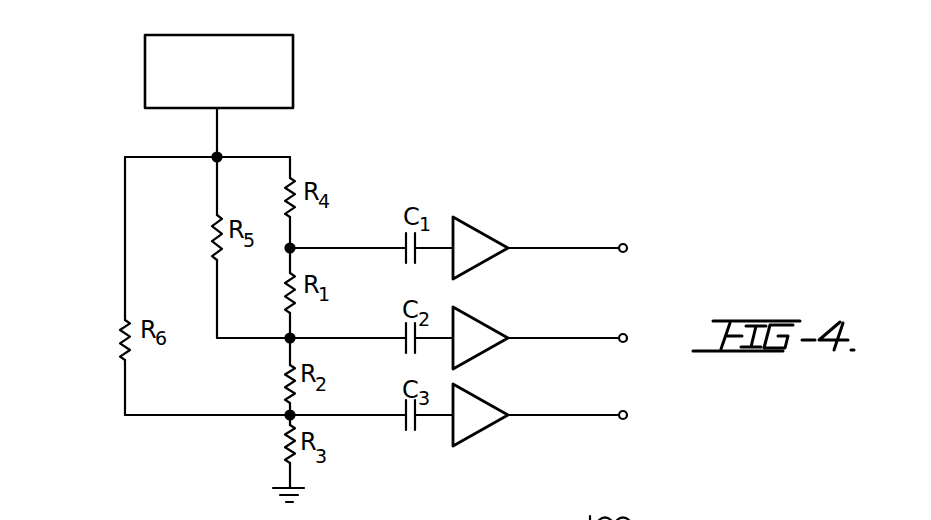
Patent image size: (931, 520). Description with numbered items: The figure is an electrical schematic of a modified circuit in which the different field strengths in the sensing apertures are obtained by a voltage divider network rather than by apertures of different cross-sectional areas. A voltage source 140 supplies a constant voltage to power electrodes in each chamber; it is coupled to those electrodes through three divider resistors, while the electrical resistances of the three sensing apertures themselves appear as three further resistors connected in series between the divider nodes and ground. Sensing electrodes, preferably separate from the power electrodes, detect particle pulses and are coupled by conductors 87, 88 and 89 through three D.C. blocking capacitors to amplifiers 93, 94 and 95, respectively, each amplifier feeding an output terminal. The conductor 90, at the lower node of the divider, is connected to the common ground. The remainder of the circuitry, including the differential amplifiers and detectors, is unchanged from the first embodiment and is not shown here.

The voltage source 140 is at (293, 53).
The electrical conductor 87 is at (338, 248).
The electrical conductor 88 is at (345, 338).
The electrical conductor 89 is at (345, 415).
The electrical conductor 90 is at (286, 418).
The amplifier 93 is at (489, 238).
The amplifier 94 is at (489, 331).
The amplifier 95 is at (489, 407).